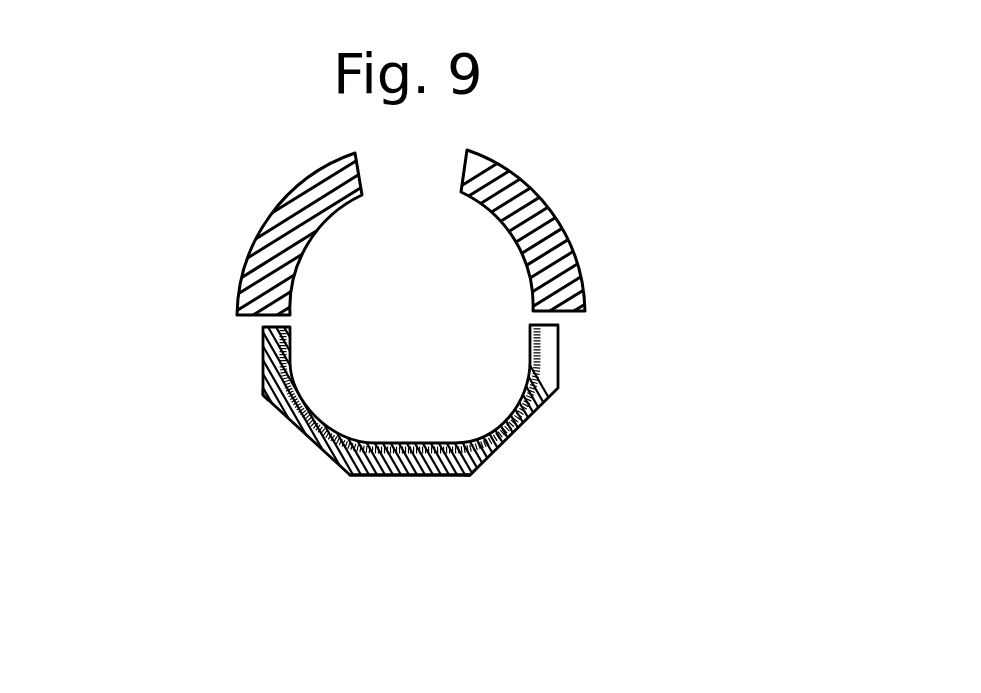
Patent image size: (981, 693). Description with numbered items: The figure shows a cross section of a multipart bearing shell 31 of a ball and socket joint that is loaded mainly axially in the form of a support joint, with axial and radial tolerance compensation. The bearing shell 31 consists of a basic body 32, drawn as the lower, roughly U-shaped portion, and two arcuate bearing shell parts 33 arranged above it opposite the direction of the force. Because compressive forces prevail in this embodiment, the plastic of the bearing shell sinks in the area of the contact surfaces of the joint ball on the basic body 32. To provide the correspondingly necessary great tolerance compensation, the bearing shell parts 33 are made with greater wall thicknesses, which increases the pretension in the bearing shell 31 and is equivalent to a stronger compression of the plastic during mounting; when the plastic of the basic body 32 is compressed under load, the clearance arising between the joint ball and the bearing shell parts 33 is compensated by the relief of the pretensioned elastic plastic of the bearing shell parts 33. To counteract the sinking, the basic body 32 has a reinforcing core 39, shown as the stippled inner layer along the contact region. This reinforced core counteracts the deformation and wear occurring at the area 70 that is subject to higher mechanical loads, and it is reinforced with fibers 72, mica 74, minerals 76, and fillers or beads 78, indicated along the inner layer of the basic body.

The bearing shell 31 is at (558, 160).
The bearing shell parts 33 is at (246, 245).
The basic body 32 is at (500, 437).
The reinforcing core 39 is at (392, 478).
The area subject to higher mechanical loads 70 is at (367, 476).
The fibers 72 is at (546, 362).
The mica 74 is at (274, 369).
The minerals 76 is at (280, 397).
The fillers or beads 78 is at (485, 454).